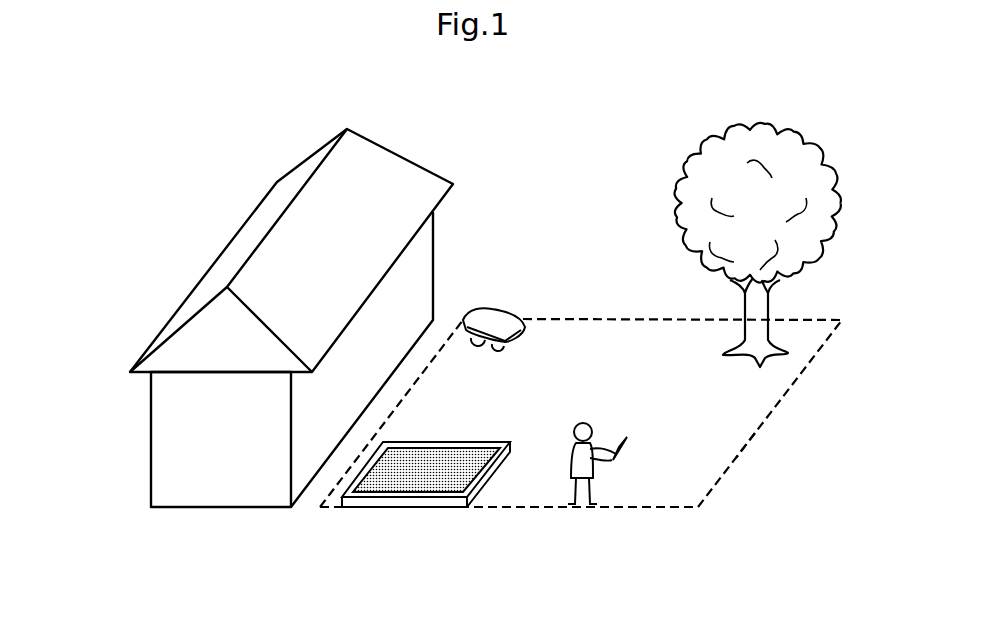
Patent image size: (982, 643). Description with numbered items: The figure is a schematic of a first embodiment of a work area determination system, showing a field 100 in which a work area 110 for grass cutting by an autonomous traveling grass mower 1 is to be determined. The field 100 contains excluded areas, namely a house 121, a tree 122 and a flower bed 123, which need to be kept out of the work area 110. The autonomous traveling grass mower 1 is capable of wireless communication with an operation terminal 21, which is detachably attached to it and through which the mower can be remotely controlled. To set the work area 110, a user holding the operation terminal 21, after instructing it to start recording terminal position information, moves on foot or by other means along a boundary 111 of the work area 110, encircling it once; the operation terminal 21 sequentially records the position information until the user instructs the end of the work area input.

The autonomous traveling grass mower 1 is at (497, 319).
The operation terminal 21 is at (625, 453).
The field 100 is at (602, 275).
The work area 110 is at (688, 433).
The boundary 111 is at (743, 450).
The house 121 is at (151, 443).
The tree 122 is at (785, 178).
The flower bed 123 is at (435, 460).